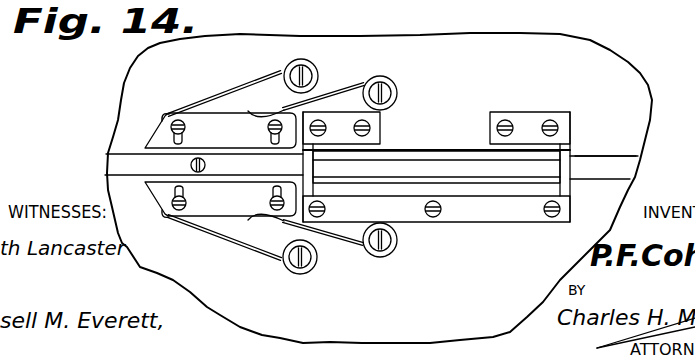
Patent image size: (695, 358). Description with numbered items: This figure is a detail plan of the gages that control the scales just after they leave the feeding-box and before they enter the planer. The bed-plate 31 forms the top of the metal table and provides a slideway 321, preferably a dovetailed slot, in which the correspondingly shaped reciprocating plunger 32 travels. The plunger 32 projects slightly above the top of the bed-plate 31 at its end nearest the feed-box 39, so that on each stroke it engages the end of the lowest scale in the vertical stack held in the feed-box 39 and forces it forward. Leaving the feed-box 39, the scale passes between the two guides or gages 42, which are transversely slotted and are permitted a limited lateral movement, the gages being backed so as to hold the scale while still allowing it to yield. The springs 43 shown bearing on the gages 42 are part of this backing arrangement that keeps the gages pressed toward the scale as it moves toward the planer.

The bed-plate 31 is at (379, 188).
The reciprocating plunger 32 is at (612, 170).
The slideway 321 is at (611, 157).
The feed-box 39 is at (423, 188).
The gages 42 is at (220, 164).
The spring 43 is at (222, 97).